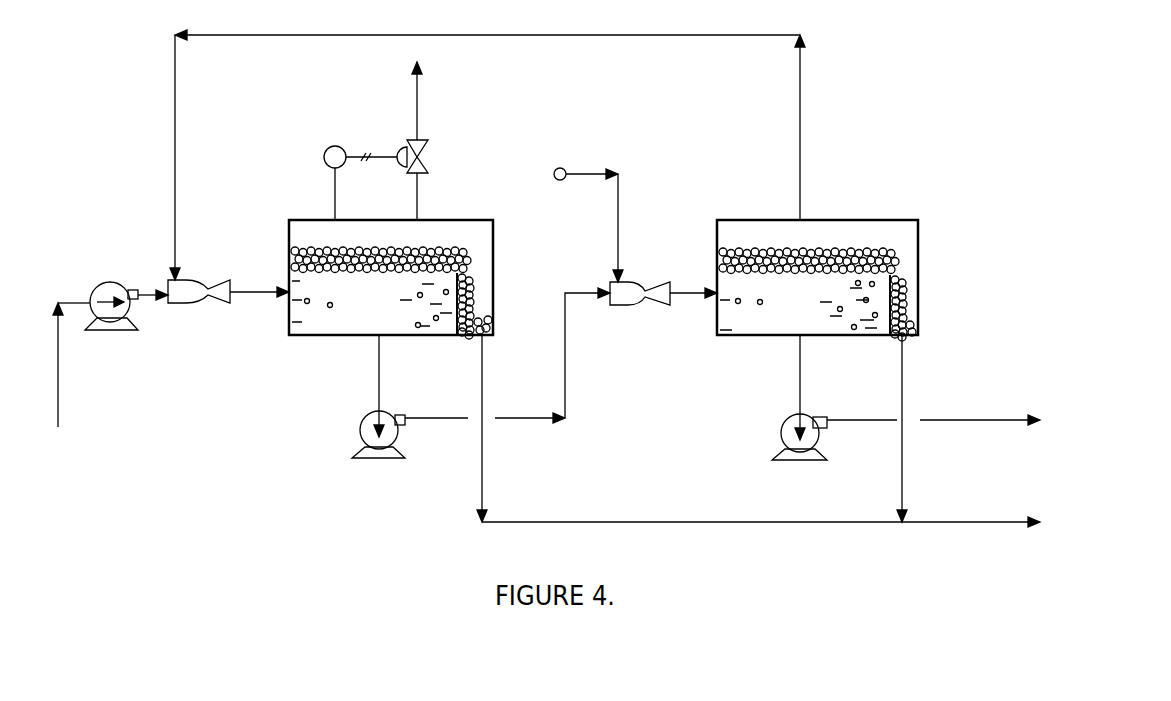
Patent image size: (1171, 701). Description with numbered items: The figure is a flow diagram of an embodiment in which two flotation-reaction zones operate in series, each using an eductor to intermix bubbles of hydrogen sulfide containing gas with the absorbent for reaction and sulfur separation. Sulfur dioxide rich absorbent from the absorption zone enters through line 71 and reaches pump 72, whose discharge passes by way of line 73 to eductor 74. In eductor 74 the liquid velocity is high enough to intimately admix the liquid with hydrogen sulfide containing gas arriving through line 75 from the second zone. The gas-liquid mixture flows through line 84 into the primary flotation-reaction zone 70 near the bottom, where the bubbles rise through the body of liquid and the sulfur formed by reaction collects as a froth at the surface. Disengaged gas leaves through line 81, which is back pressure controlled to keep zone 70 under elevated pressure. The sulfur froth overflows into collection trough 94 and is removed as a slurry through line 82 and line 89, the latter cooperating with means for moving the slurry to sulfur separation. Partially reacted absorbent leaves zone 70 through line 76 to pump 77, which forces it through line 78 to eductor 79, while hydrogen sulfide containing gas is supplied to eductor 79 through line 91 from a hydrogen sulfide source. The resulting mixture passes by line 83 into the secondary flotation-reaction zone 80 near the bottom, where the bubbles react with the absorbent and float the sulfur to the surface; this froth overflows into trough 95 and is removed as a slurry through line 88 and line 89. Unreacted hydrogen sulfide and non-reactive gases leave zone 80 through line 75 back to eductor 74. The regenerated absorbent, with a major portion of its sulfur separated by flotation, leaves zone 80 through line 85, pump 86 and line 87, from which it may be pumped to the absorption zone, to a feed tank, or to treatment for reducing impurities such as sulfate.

The flotation-reaction zone 70 is at (532, 273).
The line 71 is at (60, 377).
The pump 72 is at (110, 282).
The pump discharge line 73 is at (140, 290).
The eductor 74 is at (200, 280).
The line 75 is at (177, 175).
The line 76 is at (379, 372).
The pump 77 is at (398, 437).
The line 78 is at (566, 398).
The eductor 79 is at (643, 282).
The flotation-reaction zone 80 is at (963, 291).
The line 81 is at (418, 188).
The line 82 is at (483, 472).
The secondary eductor outlet line 83 is at (686, 292).
The line 84 is at (258, 292).
The line 85 is at (800, 390).
The pump 86 is at (785, 443).
The line 87 is at (940, 418).
The line 88 is at (902, 482).
The line 89 is at (948, 524).
The line 91 is at (619, 196).
The collection trough 94 is at (493, 328).
The trough 95 is at (918, 330).